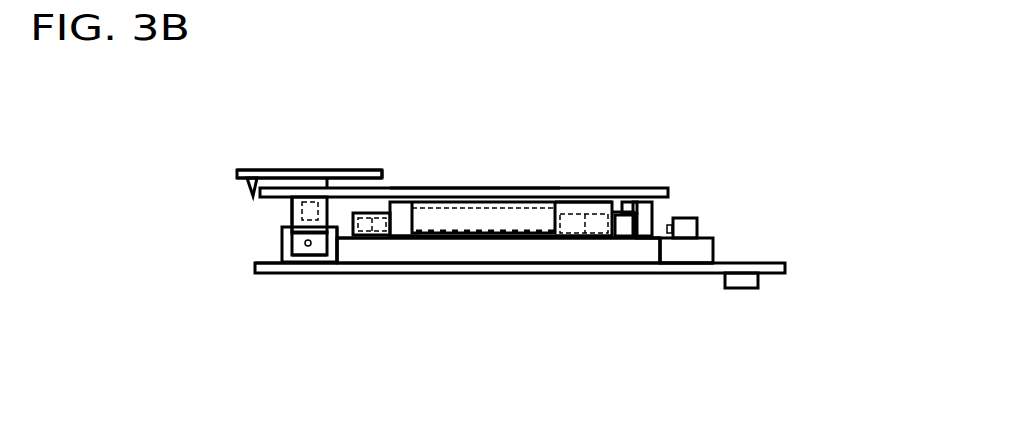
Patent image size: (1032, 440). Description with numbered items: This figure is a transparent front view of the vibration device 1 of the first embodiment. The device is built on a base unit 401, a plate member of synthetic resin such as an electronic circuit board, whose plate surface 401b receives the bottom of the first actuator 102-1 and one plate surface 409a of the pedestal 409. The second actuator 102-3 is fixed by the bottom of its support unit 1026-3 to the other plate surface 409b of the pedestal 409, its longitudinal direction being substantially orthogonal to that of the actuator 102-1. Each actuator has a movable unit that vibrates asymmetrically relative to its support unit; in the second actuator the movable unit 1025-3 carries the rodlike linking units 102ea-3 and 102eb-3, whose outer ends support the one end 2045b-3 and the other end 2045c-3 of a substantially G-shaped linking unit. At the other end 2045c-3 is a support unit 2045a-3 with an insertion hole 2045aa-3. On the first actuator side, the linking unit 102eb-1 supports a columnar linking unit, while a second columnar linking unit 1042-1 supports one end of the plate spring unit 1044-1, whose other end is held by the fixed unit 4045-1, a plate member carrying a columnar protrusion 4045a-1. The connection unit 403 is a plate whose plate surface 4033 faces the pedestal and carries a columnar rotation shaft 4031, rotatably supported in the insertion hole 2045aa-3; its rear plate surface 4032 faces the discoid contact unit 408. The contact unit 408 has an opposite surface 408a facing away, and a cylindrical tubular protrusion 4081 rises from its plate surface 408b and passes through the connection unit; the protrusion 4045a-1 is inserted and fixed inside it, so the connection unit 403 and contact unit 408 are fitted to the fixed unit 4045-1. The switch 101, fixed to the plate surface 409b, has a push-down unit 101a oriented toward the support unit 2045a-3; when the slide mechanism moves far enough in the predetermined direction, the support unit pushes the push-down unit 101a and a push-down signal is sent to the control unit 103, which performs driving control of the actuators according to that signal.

The vibration device 1 is at (818, 90).
The contact unit 408 is at (237, 172).
The holder upper surface 408a is at (348, 172).
The plate surface 408b is at (257, 170).
The cylindrical tubular protrusion 4081 is at (333, 172).
The protrusion 4045a-1 is at (303, 195).
The fixed unit 4045-1 is at (290, 212).
The plate spring unit 1044-1 is at (290, 220).
The connection unit 403 is at (668, 188).
The plate surface 4032 is at (535, 188).
The rotation shaft 4031 is at (624, 202).
The plate surface 4033 is at (657, 205).
The plate surface 401b is at (255, 263).
The linking unit 1042-1 is at (270, 264).
The base unit 401 is at (285, 272).
The linking unit 102eb-1 is at (298, 265).
The actuator 102-1 is at (338, 236).
The pedestal 409 is at (492, 248).
The plate surface 409a is at (472, 248).
The plate surface 409b is at (660, 240).
The one end of linking unit 2045b-3 is at (378, 213).
The movable unit 1025-3 is at (475, 220).
The actuator 102-3 is at (565, 213).
The support unit 1026-3 is at (580, 205).
The linking unit 102ea-3 is at (403, 228).
The linking unit 102eb-3 is at (560, 237).
The other end of linking unit 2045c-3 is at (615, 238).
The support unit 2045a-3 is at (645, 238).
The insertion hole 2045aa-3 is at (630, 212).
The switch 101 is at (697, 226).
The push-down unit 101a is at (673, 240).
The control unit 103 is at (758, 287).